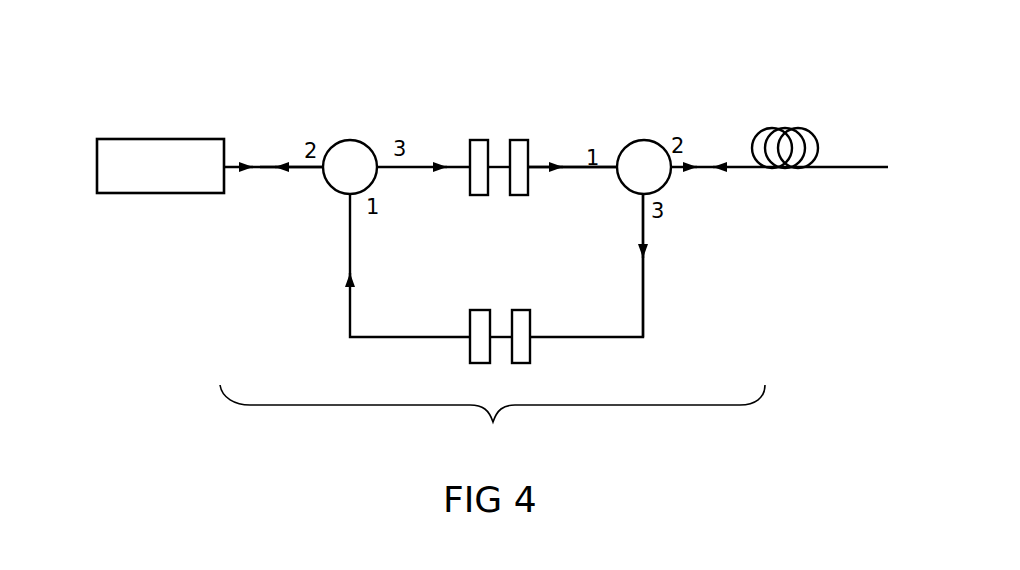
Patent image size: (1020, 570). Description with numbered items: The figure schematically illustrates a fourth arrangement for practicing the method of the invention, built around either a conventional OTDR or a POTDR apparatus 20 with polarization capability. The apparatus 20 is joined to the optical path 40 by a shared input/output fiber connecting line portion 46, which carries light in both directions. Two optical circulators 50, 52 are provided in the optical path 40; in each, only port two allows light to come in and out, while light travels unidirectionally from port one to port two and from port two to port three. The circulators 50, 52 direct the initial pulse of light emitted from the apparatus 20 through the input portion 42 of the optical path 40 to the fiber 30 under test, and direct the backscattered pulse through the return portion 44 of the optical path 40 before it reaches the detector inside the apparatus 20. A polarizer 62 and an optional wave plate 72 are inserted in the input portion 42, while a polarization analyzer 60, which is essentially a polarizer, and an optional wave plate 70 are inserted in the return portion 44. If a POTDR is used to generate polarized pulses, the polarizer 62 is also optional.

The OTDR/POTDR apparatus 20 is at (150, 140).
The fiber under test 30 is at (808, 125).
The optical path 40 is at (492, 420).
The input portion of the optical path 42 is at (545, 162).
The return portion of the optical path 44 is at (643, 273).
The shared input/output fiber connecting line portion 46 is at (310, 168).
The optical circulator 50 is at (633, 138).
The optical circulator 52 is at (372, 145).
The polarization analyzer 60 is at (473, 362).
The polarizer 62 is at (472, 140).
The wave plate 70 is at (528, 363).
The wave plate 72 is at (522, 140).